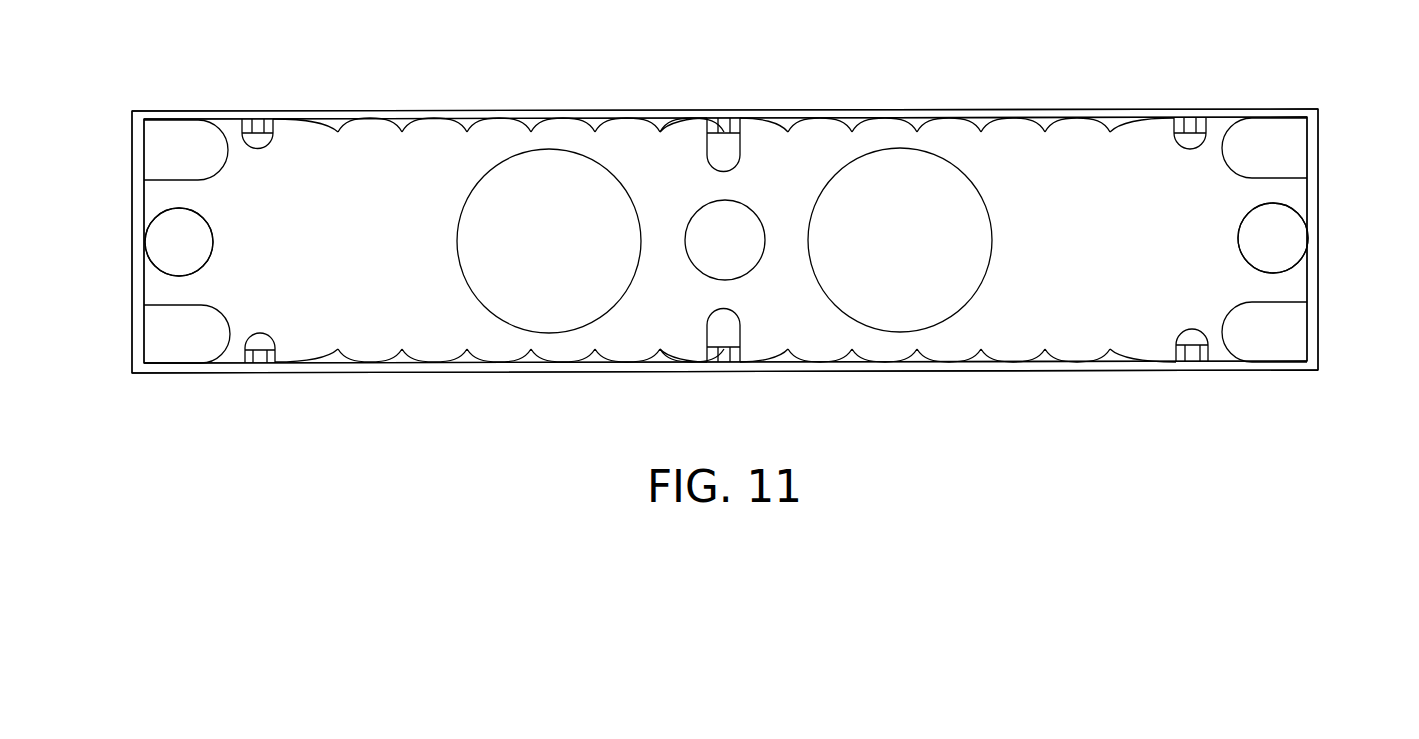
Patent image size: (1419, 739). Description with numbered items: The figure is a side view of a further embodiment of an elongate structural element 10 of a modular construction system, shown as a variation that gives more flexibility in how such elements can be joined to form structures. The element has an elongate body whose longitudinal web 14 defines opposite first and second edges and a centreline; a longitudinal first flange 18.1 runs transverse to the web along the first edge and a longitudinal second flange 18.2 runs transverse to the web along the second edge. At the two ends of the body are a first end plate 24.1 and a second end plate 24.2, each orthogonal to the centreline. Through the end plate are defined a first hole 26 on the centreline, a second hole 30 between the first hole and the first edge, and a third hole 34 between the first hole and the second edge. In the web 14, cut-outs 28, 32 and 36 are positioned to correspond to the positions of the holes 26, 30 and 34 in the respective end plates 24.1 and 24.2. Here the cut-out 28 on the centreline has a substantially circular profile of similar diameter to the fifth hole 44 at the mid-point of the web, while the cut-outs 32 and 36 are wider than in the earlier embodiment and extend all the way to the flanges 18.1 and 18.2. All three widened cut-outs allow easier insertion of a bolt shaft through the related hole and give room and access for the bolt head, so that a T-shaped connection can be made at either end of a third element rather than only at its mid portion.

The elongate structural element 10 is at (750, 394).
The longitudinal web 14 is at (412, 251).
The first flange 18.1 is at (222, 110).
The second flange 18.2 is at (223, 374).
The first end plate 24.1 is at (133, 363).
The second end plate 24.2 is at (1320, 362).
The first hole 26 is at (144, 235).
The cut-out 28 is at (208, 254).
The second hole 30 is at (144, 143).
The cut-out 32 is at (216, 168).
The third hole 34 is at (144, 328).
The cut-out 36 is at (214, 314).
The fifth hole 44 is at (690, 242).